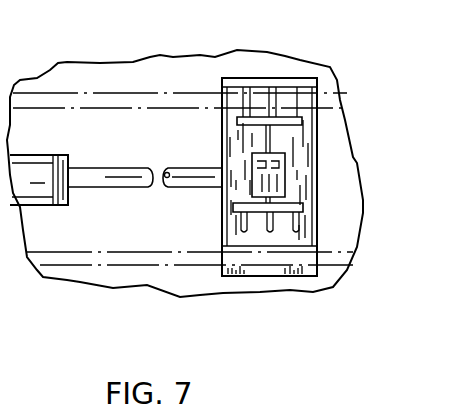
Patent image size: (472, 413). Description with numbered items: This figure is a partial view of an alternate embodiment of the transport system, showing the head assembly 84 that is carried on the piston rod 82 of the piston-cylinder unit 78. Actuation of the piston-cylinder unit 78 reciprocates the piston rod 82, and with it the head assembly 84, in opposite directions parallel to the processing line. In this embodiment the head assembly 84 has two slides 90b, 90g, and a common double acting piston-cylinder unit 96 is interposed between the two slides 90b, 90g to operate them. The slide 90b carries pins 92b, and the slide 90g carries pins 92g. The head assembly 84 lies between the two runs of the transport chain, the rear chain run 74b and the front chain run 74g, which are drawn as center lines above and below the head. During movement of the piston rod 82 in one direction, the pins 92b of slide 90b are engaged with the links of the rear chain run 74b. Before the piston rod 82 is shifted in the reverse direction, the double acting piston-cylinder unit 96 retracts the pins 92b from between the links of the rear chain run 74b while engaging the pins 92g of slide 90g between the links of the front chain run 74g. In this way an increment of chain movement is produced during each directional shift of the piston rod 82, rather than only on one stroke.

The rear chain run 74b is at (80, 93).
The front chain run 74g is at (74, 238).
The piston-cylinder unit 78 is at (32, 172).
The piston rod 82 is at (100, 169).
The head assembly 84 is at (306, 194).
The slide 90b is at (237, 121).
The slide 90g is at (233, 207).
The pins 92b is at (290, 100).
The pins 92g is at (248, 236).
The double acting piston-cylinder unit 96 is at (252, 163).